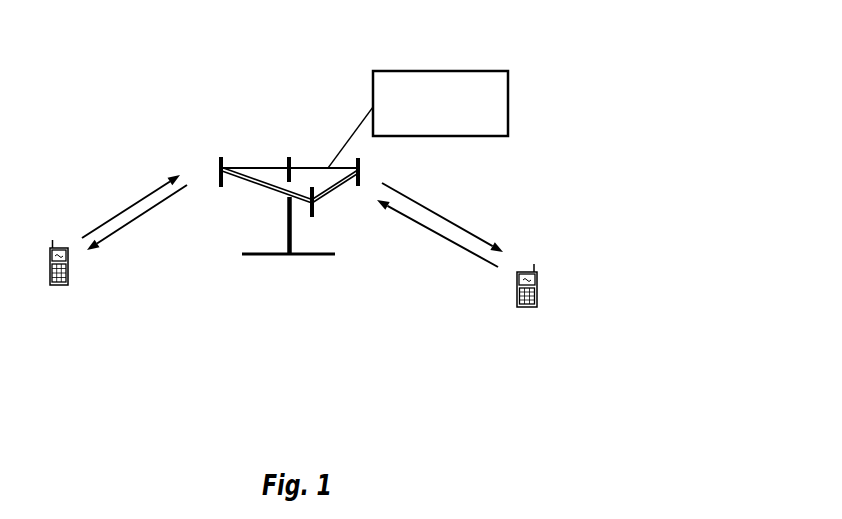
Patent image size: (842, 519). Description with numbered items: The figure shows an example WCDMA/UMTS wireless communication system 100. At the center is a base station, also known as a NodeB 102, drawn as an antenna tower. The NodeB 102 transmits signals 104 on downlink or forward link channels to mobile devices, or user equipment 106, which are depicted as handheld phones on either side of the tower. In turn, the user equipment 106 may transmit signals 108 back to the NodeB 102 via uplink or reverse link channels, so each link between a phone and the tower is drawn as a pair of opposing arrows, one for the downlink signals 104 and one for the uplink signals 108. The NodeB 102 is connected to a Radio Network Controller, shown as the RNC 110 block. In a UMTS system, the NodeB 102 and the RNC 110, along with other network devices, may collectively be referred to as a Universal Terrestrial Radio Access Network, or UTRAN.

The communication system 100 is at (67, 58).
The base station (NodeB) 102 is at (277, 254).
The downlink signals 104 is at (143, 214).
The user equipment 106 is at (54, 248).
The uplink signals 108 is at (132, 206).
The radio network controller 110 is at (486, 71).